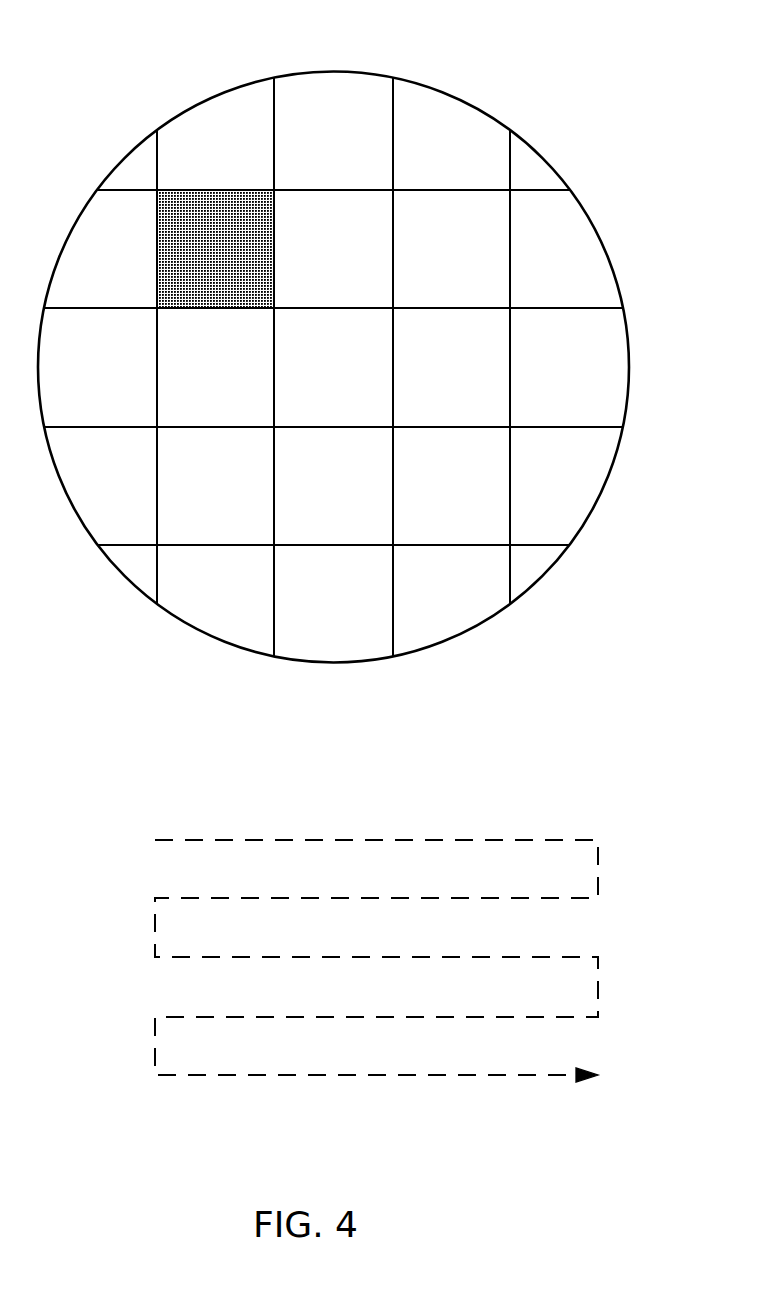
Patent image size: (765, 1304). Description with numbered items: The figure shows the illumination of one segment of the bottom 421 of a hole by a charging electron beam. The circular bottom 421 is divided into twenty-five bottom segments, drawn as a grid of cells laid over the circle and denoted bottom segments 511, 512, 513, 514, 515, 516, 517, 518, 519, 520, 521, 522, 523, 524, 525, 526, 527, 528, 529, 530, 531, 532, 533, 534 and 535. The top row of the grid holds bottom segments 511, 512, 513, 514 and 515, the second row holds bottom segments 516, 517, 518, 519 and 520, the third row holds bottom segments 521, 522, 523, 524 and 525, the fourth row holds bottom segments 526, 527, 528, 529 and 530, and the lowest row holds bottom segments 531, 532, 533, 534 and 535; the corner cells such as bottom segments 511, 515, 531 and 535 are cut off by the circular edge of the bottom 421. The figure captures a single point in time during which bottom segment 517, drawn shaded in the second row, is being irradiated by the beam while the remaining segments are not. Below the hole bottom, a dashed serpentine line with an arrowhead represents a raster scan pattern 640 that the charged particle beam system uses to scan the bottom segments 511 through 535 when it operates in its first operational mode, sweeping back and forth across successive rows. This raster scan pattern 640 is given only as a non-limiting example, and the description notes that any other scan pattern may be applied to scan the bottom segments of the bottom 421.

The bottom of a hole 421 is at (212, 48).
The bottom segment 511 is at (135, 175).
The bottom segment 512 is at (245, 159).
The bottom segment 513 is at (354, 156).
The bottom segment 514 is at (454, 160).
The bottom segment 515 is at (532, 163).
The bottom segment 516 is at (137, 269).
The bottom segment 517 is at (237, 259).
The bottom segment 518 is at (369, 262).
The bottom segment 519 is at (462, 262).
The bottom segment 520 is at (577, 264).
The bottom segment 521 is at (129, 366).
The bottom segment 522 is at (227, 366).
The bottom segment 523 is at (369, 376).
The bottom segment 524 is at (469, 366).
The bottom segment 525 is at (577, 366).
The bottom segment 526 is at (132, 481).
The bottom segment 527 is at (235, 469).
The bottom segment 528 is at (344, 483).
The bottom segment 529 is at (459, 484).
The bottom segment 530 is at (577, 484).
The bottom segment 531 is at (130, 560).
The bottom segment 532 is at (254, 599).
The bottom segment 533 is at (362, 599).
The bottom segment 534 is at (464, 592).
The bottom segment 535 is at (523, 565).
The raster scan pattern 640 is at (420, 1078).